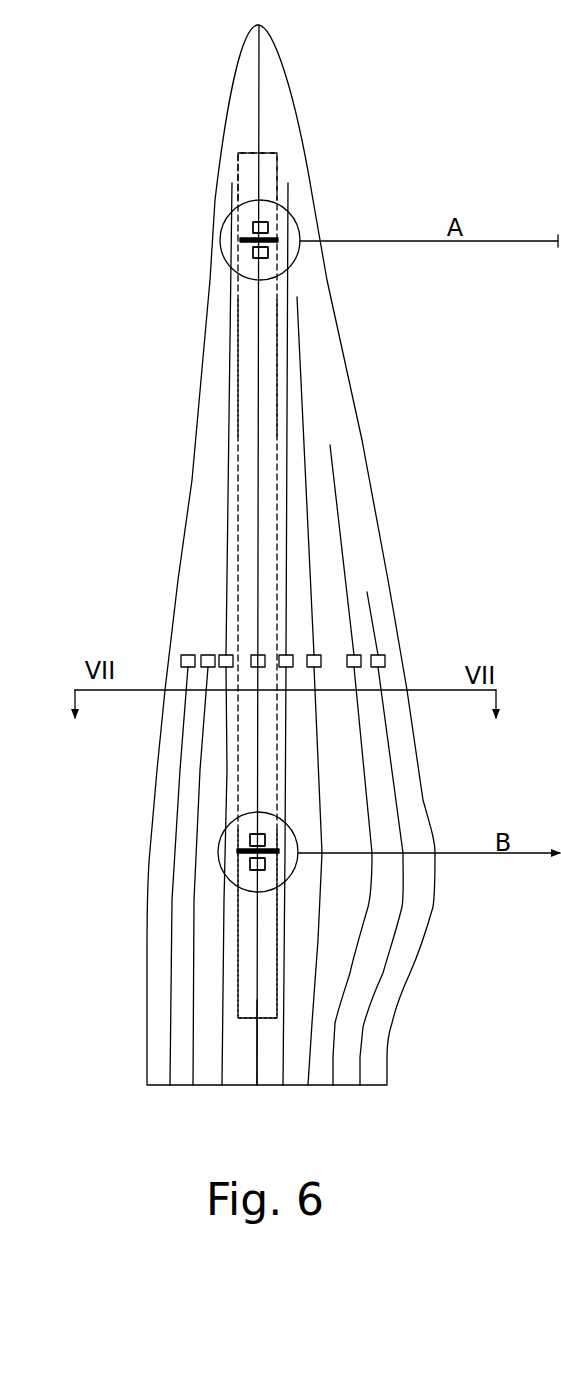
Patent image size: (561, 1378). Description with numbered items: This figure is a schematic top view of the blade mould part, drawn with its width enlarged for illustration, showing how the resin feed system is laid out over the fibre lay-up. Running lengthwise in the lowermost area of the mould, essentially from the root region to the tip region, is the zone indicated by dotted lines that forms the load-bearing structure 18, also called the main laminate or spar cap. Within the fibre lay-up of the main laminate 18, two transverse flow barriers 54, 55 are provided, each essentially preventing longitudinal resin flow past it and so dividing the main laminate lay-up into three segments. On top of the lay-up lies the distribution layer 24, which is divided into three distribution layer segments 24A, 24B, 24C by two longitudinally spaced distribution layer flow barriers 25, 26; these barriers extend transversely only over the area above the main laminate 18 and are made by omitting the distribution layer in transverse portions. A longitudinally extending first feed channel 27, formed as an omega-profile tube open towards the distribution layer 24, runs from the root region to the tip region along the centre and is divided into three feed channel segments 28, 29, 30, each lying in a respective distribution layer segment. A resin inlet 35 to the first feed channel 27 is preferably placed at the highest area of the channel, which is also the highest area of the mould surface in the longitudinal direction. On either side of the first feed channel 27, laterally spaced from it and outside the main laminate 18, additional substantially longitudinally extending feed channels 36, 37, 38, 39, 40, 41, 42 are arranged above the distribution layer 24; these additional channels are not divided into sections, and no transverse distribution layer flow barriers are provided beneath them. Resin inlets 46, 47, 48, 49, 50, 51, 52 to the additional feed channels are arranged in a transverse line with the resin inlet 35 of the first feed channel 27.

The load-bearing structure 18 is at (263, 992).
The distribution layer 24 is at (290, 420).
The distribution layer segment 24A is at (247, 910).
The distribution layer segment 24B is at (245, 368).
The distribution layer segment 24C is at (248, 163).
The distribution layer flow barrier 25 is at (240, 837).
The distribution layer flow barrier 26 is at (243, 242).
The first feed channel 27 is at (253, 1070).
The feed channel segment 28 is at (257, 978).
The feed channel segment 29 is at (260, 423).
The feed channel segment 30 is at (256, 78).
The resin inlet 35 is at (258, 655).
The additional feed channel 36 is at (182, 725).
The additional feed channel 37 is at (197, 752).
The additional feed channel 38 is at (223, 932).
The additional feed channel 39 is at (290, 288).
The additional feed channel 40 is at (305, 356).
The additional feed channel 41 is at (335, 455).
The additional feed channel 42 is at (400, 807).
The resin inlet 46 is at (188, 655).
The resin inlet 47 is at (208, 655).
The resin inlet 48 is at (226, 655).
The resin inlet 49 is at (288, 655).
The resin inlet 50 is at (314, 655).
The resin inlet 51 is at (354, 655).
The resin inlet 52 is at (378, 655).
The transverse flow barrier 54 is at (257, 852).
The transverse flow barrier 55 is at (260, 240).